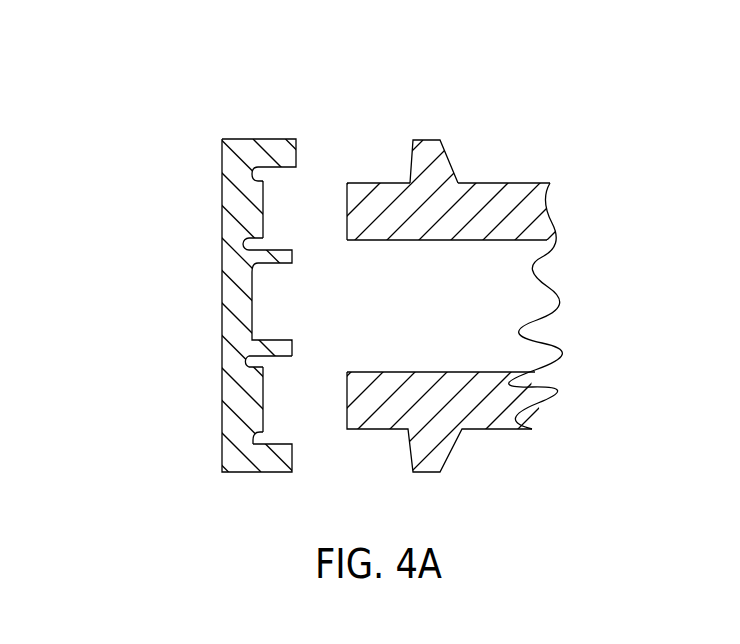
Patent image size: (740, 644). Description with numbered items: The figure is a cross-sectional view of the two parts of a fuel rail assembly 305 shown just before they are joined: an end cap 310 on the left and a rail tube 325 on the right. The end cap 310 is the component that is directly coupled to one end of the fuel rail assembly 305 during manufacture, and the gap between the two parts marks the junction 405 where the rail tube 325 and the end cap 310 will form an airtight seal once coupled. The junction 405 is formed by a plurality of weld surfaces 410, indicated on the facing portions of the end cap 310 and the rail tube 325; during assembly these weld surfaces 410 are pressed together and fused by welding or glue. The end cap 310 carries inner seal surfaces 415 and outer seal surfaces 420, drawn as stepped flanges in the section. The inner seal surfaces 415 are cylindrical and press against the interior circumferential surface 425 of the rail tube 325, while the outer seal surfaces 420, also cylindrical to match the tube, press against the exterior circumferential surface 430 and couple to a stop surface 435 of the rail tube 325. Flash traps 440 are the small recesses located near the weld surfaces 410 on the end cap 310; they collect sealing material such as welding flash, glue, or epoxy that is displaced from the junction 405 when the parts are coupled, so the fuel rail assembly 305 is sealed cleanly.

The fuel rail assembly 305 is at (150, 278).
The end cap 310 is at (208, 168).
The rail tube 325 is at (527, 405).
The junction 405 is at (332, 82).
The weld surfaces 410 is at (265, 197).
The inner seal surfaces 415 is at (270, 263).
The outer seal surfaces 420 is at (297, 150).
The interior circumferential surface 425 is at (377, 242).
The exterior circumferential surface 430 is at (365, 182).
The stop surface 435 is at (408, 182).
The flash traps 440 is at (275, 362).